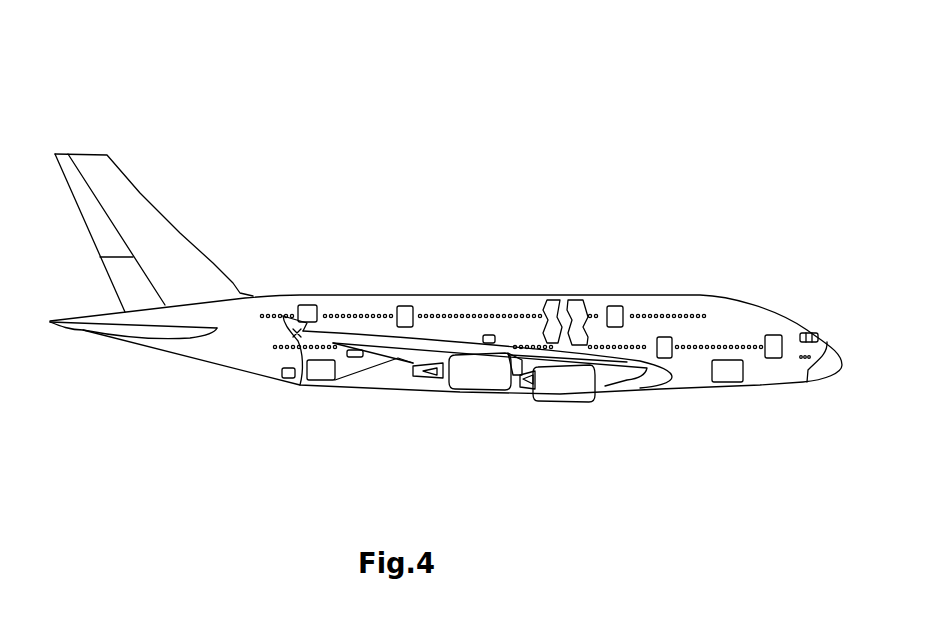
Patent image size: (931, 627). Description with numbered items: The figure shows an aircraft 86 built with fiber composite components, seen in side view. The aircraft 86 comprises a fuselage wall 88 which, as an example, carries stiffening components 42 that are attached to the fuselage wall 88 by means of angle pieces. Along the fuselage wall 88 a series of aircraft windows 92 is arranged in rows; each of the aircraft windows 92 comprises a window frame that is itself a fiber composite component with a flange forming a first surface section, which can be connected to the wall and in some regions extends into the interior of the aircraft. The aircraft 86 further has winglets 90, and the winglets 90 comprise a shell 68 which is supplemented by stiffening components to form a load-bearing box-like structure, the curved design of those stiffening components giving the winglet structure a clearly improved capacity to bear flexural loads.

The aircraft 86 is at (446, 262).
The fuselage wall 88 is at (668, 308).
The winglets 90 is at (309, 302).
The aircraft windows 92 is at (450, 308).
The stiffening components 42 is at (580, 305).
The shell 68 is at (302, 335).